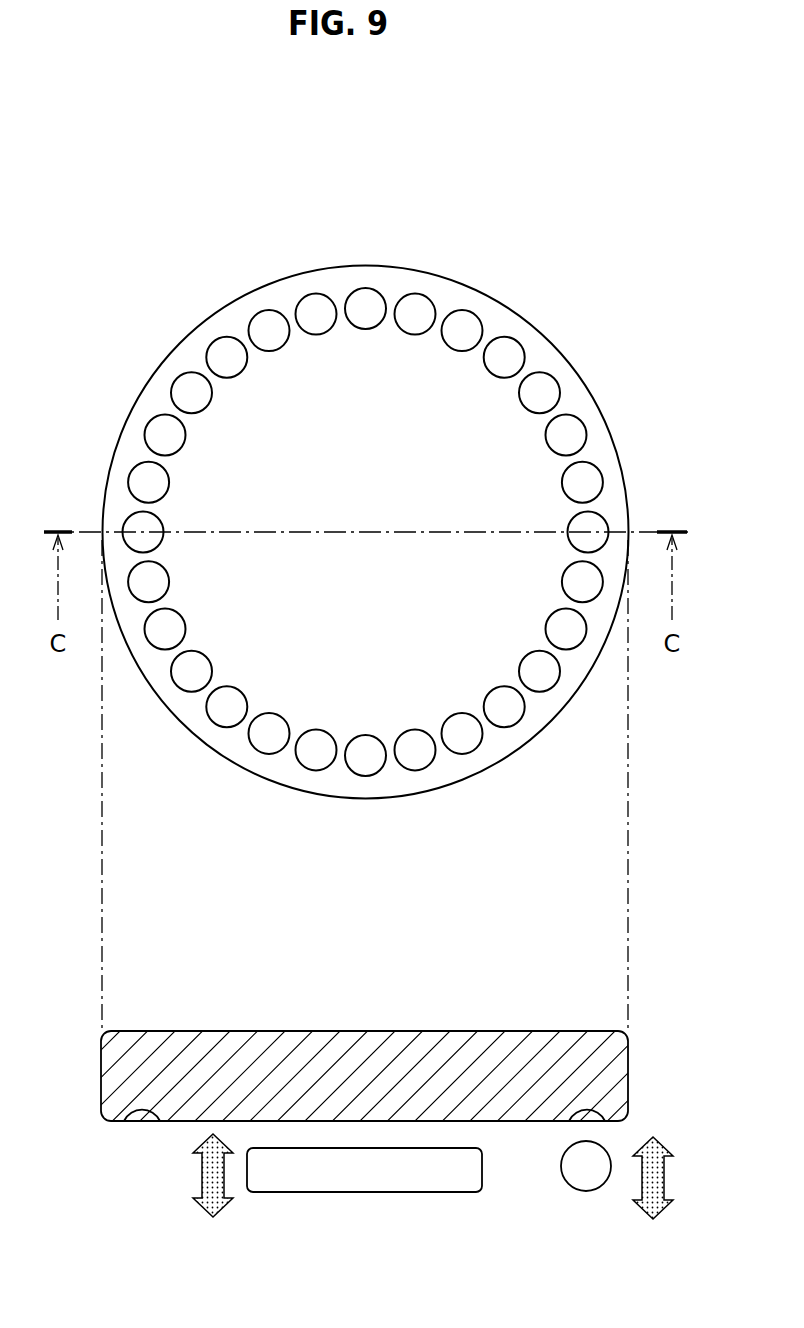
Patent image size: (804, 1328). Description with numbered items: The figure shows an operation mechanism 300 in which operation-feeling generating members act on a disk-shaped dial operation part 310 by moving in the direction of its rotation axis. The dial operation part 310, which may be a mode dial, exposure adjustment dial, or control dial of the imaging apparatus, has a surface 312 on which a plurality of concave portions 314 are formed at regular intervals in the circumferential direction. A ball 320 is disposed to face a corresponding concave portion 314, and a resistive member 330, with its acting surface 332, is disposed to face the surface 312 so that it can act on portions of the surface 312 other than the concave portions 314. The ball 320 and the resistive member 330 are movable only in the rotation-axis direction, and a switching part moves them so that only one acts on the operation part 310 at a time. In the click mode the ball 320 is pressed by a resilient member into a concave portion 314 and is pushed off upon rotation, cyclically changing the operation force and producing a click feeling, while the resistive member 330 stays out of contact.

The operation mechanism 300 is at (680, 1004).
The dial operation part 310 is at (558, 343).
The surface 312 is at (483, 480).
The concave portion 314 is at (567, 437).
The ball 320 is at (585, 1191).
The resistive member 330 is at (365, 1192).
The wiping surface 332 is at (452, 1148).